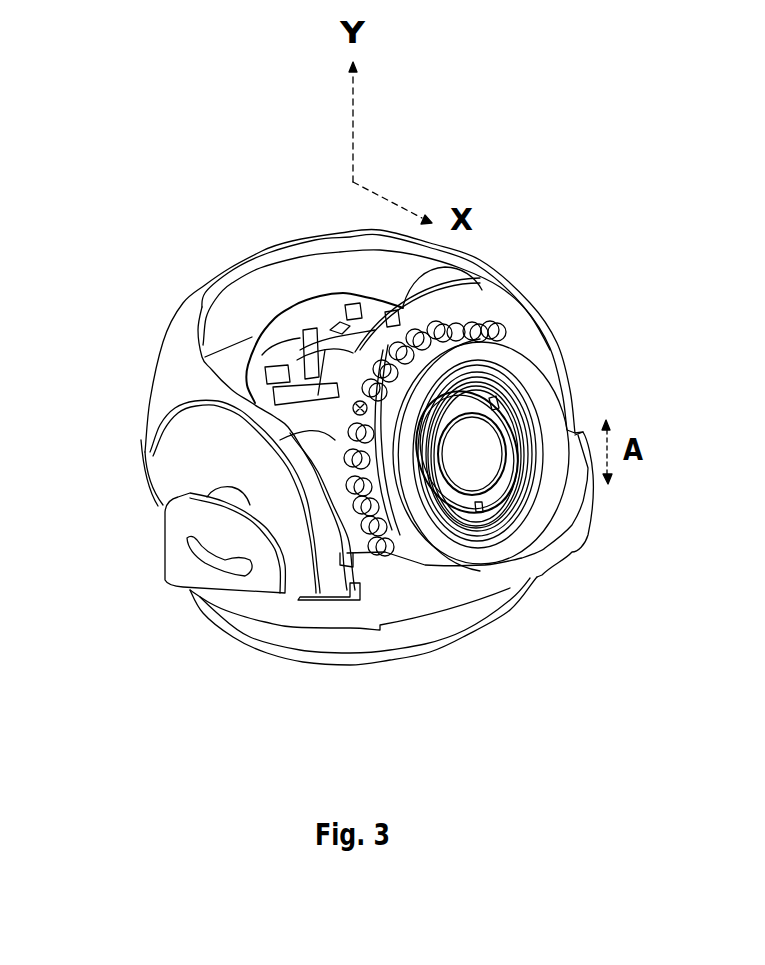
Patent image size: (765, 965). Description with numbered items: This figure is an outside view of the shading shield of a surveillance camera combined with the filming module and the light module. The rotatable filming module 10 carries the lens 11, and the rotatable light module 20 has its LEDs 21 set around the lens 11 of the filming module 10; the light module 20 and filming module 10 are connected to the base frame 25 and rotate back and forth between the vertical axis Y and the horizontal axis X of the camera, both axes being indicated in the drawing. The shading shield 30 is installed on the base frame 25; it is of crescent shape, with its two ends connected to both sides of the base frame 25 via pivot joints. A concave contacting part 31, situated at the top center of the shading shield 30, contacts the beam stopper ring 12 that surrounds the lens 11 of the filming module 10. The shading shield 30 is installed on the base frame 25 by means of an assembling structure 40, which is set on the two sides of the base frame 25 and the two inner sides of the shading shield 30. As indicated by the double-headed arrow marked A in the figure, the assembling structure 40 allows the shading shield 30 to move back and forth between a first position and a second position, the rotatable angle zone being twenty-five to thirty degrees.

The filming module 10 is at (559, 388).
The lens 11 is at (483, 453).
The beam stopper ring 12 is at (500, 353).
The light module 20 is at (382, 333).
The LED 21 is at (383, 368).
The base frame 25 is at (247, 637).
The shading shield 30 is at (390, 583).
The concave contacting part 31 is at (527, 557).
The assembling structure 40 is at (160, 564).